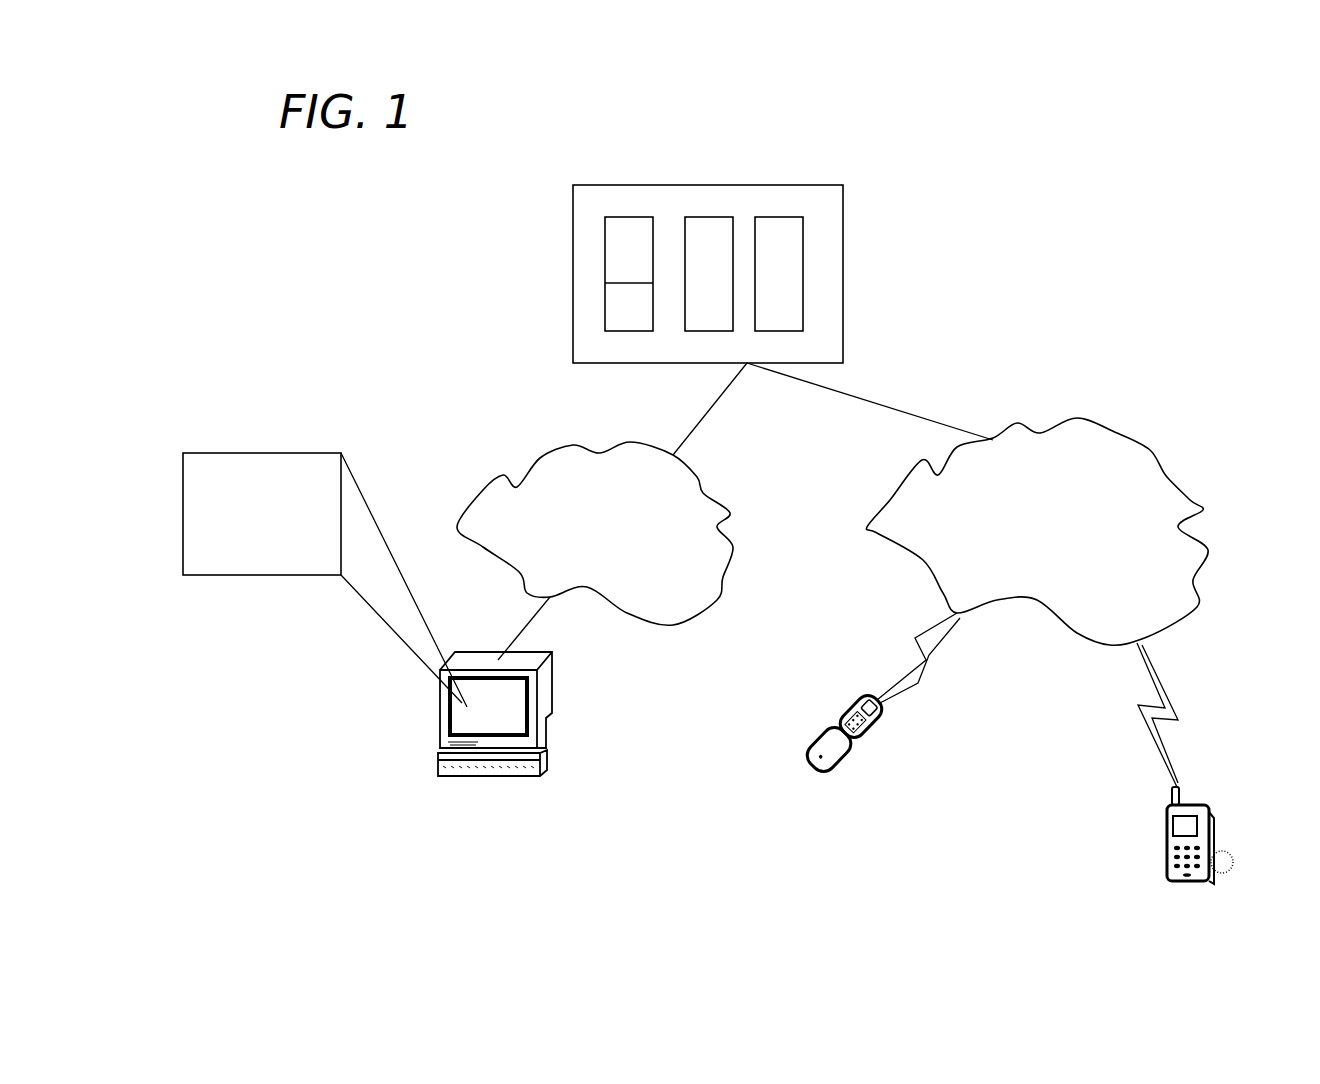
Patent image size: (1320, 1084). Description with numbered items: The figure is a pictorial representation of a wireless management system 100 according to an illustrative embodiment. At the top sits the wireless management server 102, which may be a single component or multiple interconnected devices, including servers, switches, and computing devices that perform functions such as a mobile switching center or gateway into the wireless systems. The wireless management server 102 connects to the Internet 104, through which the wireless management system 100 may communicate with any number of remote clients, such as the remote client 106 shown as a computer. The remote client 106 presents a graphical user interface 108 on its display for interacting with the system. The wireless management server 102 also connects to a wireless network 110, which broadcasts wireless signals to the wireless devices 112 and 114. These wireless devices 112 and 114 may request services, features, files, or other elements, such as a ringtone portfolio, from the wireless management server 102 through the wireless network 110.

The wireless management system 100 is at (190, 247).
The wireless management server 102 is at (826, 203).
The Internet 104 is at (579, 559).
The remote client 106 is at (437, 755).
The graphical user interface 108 is at (243, 569).
The wireless network 110 is at (1018, 557).
The wireless device 112 is at (833, 723).
The wireless device 114 is at (1212, 875).